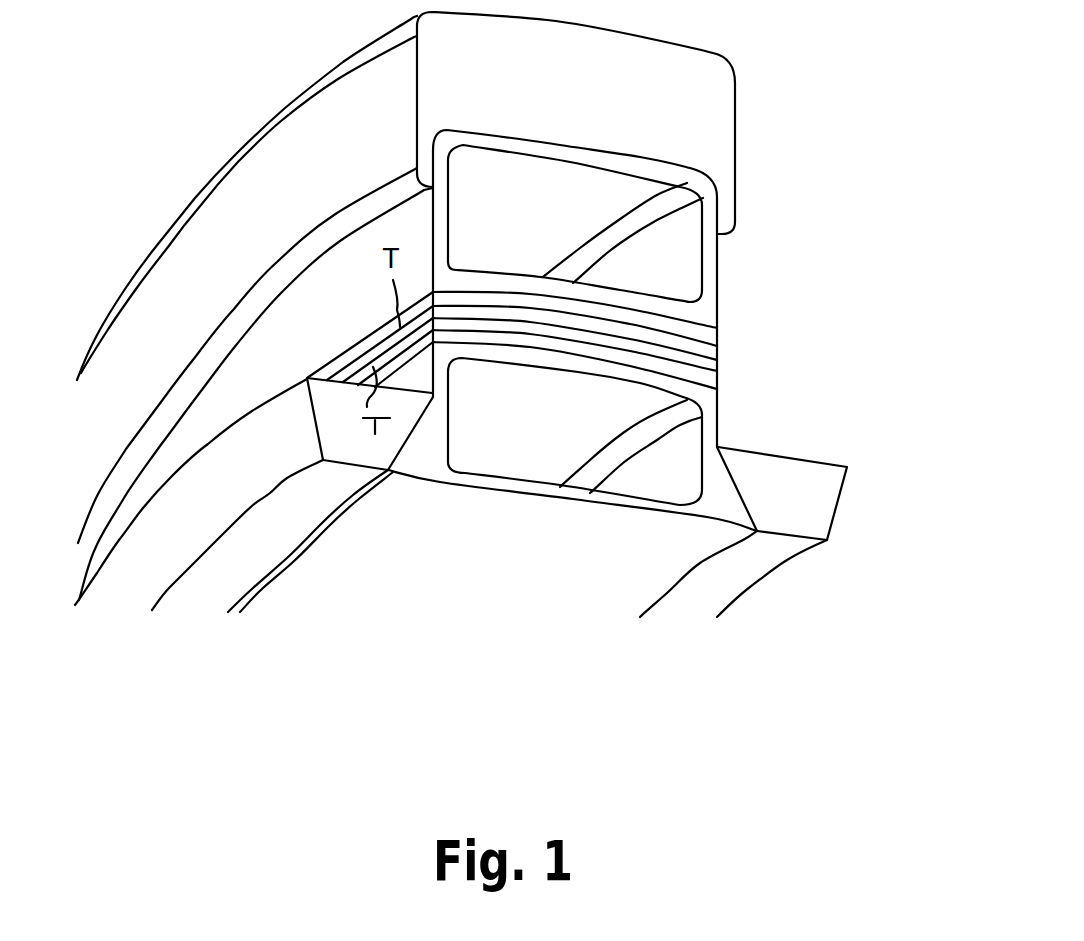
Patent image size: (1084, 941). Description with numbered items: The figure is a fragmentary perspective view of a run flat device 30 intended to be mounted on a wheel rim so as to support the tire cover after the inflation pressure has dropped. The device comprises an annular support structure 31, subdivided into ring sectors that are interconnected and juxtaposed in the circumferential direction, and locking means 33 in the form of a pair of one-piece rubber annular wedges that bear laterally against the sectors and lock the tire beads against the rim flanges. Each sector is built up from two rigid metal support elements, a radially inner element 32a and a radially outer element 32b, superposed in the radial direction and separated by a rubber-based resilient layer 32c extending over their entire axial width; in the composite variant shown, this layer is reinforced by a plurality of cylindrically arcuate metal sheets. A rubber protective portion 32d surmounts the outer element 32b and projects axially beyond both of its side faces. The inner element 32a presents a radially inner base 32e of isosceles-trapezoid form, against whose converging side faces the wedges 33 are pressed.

The run flat device 30 is at (511, 629).
The annular support structure 31 is at (736, 312).
The radially inner rigid support element 32a is at (732, 418).
The radially outer rigid support element 32b is at (730, 266).
The resilient layer 32c is at (729, 365).
The protective portion 32d is at (611, 104).
The radially inner base 32e is at (557, 495).
The locking means 33 is at (283, 382).